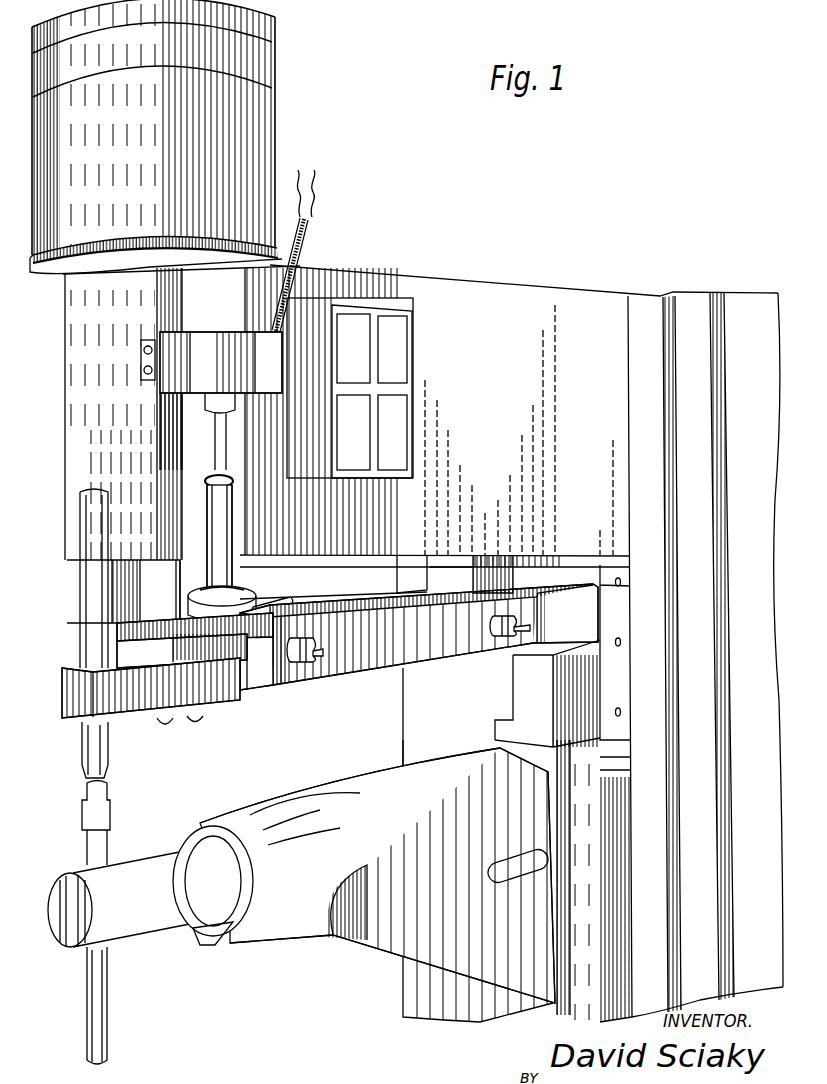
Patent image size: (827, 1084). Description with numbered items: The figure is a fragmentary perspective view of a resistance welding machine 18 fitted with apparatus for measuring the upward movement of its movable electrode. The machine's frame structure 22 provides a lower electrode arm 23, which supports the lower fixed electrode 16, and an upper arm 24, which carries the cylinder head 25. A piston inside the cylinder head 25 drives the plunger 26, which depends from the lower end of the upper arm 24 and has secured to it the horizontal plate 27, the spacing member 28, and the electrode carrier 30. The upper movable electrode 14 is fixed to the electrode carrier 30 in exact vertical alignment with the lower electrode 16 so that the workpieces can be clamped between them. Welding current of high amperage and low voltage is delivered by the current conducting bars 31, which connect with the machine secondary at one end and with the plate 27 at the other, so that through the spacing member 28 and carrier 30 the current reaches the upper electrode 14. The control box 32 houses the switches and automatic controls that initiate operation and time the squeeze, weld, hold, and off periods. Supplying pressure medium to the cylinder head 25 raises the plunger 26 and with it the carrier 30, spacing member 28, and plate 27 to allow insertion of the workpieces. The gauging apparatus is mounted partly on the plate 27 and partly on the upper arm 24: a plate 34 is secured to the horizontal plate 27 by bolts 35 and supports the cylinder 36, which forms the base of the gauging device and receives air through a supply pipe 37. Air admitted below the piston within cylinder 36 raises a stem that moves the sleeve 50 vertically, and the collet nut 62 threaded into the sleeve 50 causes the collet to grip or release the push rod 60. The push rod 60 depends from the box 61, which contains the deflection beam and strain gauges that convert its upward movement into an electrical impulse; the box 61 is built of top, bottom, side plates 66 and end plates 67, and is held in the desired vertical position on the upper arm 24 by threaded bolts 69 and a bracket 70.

The upper movable electrode 14 is at (90, 738).
The lower fixed electrode 16 is at (95, 840).
The welding machine 18 is at (566, 279).
The frame structure 22 is at (692, 427).
The lower electrode arm 23 is at (300, 903).
The upper arm 24 is at (75, 409).
The cylinder head 25 is at (232, 133).
The plunger 26 is at (140, 597).
The horizontal plate 27 is at (117, 627).
The spacing member 28 is at (123, 655).
The electrode carrier 30 is at (120, 690).
The current conducting bars 31 is at (358, 658).
The control box 32 is at (426, 302).
The plate 34 is at (237, 653).
The bolts 35 is at (178, 585).
The cylinder 36 is at (245, 592).
The supply pipe 37 is at (292, 599).
The sleeve 50 is at (232, 526).
The push rod 60 is at (216, 440).
The box 61 is at (209, 322).
The collet nut 62 is at (235, 478).
The side plates 66 is at (212, 378).
The end plate 67 is at (172, 377).
The threaded bolts 69 is at (143, 347).
The bracket 70 is at (142, 358).